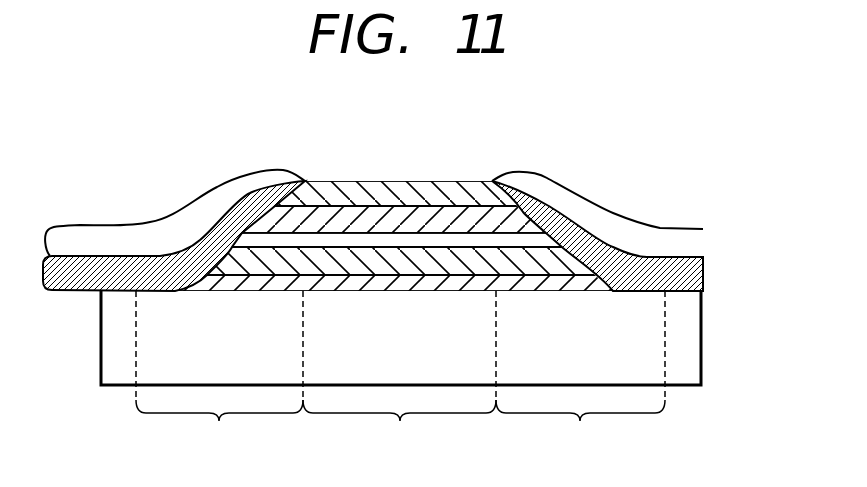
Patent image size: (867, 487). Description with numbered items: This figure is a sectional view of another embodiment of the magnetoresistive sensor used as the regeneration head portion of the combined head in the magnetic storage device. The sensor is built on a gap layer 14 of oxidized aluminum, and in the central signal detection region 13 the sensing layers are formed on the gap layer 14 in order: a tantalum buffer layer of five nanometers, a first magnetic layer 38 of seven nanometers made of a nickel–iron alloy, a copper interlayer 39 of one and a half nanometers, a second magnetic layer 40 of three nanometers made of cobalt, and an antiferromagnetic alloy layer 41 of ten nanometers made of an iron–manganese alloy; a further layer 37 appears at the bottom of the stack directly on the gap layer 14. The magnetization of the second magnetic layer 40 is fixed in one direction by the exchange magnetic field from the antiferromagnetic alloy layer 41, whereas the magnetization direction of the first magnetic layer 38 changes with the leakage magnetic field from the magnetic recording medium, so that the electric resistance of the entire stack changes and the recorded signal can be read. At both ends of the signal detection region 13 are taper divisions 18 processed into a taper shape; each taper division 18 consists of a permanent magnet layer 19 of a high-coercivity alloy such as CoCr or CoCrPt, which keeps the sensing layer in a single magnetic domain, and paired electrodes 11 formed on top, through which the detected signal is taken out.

The paired electrodes 11 is at (209, 200).
The signal detection region 13 is at (399, 427).
The gap layer 14 is at (688, 337).
The taper division 18 is at (400, 427).
The permanent magnet layer 19 is at (140, 257).
The lower layer 37 is at (490, 283).
The first magnetic layer 38 is at (415, 259).
The Cu interlayer 39 is at (372, 239).
The second magnetic layer 40 is at (347, 218).
The antiferromagnetic alloy layer 41 is at (324, 190).